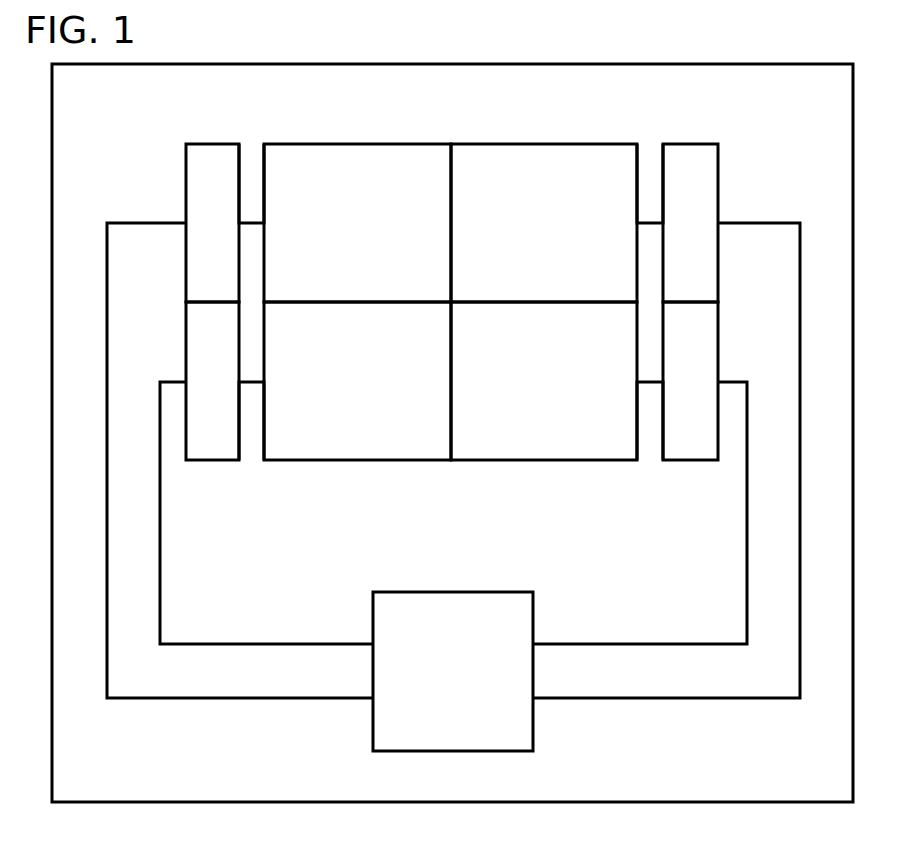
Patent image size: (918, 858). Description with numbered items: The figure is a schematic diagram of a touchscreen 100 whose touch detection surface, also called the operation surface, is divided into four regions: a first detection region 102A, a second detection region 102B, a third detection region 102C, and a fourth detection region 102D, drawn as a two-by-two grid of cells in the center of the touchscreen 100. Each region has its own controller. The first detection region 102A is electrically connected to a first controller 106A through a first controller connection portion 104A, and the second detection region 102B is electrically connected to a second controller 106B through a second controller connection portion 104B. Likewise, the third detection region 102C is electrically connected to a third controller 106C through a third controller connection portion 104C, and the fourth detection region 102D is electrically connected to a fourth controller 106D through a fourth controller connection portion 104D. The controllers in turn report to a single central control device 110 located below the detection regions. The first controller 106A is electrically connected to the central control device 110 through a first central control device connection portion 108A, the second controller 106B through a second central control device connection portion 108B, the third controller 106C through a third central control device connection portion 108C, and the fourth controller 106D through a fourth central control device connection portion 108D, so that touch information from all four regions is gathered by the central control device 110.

The touchscreen 100 is at (826, 784).
The first detection region 102A is at (357, 223).
The second detection region 102B is at (544, 223).
The third detection region 102C is at (357, 381).
The fourth detection region 102D is at (544, 381).
The first controller connection portion 104A is at (249, 223).
The second controller connection portion 104B is at (647, 223).
The third controller connection portion 104C is at (250, 382).
The fourth controller connection portion 104D is at (647, 382).
The first controller 106A is at (196, 158).
The second controller 106B is at (707, 158).
The third controller 106C is at (228, 455).
The fourth controller 106D is at (708, 455).
The first central control device connection portion 108A is at (247, 698).
The second central control device connection portion 108B is at (623, 698).
The third central control device connection portion 108C is at (280, 644).
The fourth central control device connection portion 108D is at (657, 644).
The central control device 110 is at (453, 671).